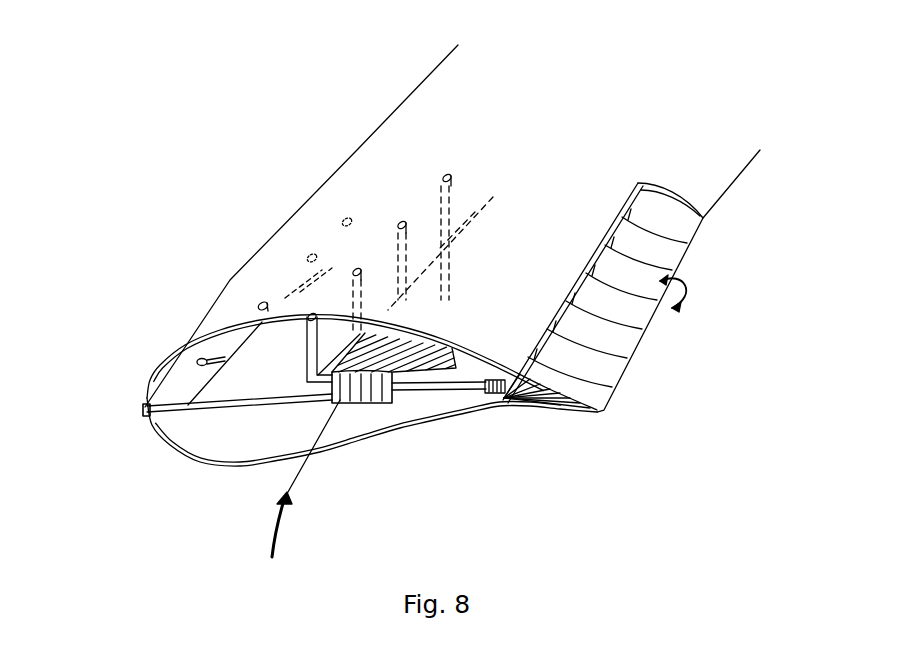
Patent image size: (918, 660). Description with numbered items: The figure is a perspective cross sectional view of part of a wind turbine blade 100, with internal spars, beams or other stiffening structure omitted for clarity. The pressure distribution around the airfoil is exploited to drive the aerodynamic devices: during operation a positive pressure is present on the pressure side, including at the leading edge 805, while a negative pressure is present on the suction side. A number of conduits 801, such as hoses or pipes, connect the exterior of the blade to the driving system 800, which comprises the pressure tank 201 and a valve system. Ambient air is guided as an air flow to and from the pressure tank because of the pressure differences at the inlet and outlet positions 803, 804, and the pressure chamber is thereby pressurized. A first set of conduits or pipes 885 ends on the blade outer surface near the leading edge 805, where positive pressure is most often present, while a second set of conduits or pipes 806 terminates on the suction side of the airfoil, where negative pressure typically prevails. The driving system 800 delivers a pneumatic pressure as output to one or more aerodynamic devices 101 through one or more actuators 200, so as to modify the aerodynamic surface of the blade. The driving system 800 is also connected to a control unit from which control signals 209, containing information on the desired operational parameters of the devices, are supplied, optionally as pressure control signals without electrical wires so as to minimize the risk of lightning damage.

The wind turbine blade 100 is at (423, 103).
The aerodynamic device 101 is at (623, 339).
The actuator 200 is at (503, 407).
The pressure tank 201 is at (397, 434).
The control signals 209 is at (297, 478).
The driving system 800 is at (367, 400).
The conduits 801 is at (333, 343).
The inlet and outlet positions 803 is at (263, 306).
The inlet and outlet positions 804 is at (447, 178).
The leading edge 805 is at (140, 417).
The second set of conduits 806 is at (378, 313).
The first set of conduits 885 is at (232, 403).